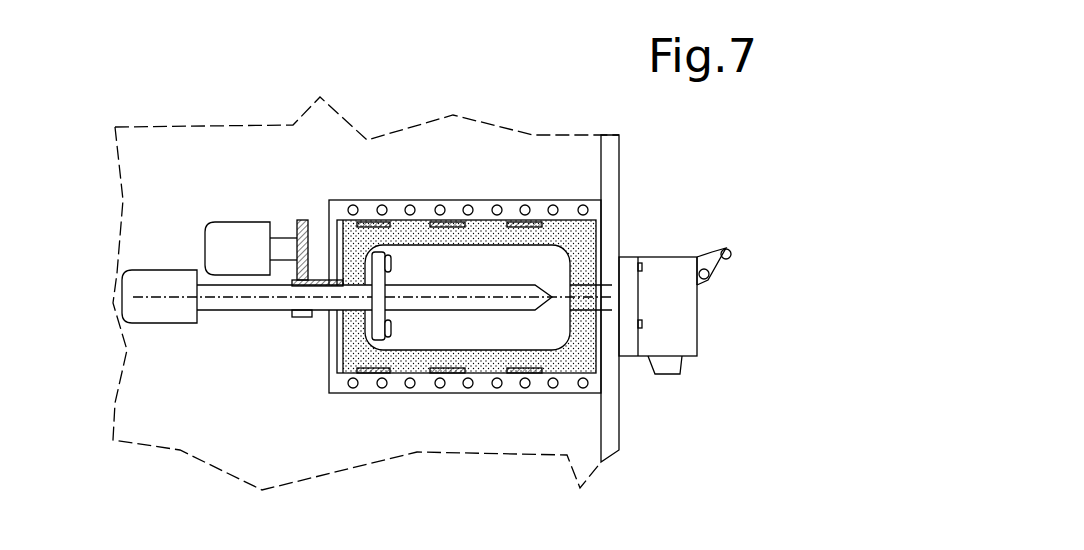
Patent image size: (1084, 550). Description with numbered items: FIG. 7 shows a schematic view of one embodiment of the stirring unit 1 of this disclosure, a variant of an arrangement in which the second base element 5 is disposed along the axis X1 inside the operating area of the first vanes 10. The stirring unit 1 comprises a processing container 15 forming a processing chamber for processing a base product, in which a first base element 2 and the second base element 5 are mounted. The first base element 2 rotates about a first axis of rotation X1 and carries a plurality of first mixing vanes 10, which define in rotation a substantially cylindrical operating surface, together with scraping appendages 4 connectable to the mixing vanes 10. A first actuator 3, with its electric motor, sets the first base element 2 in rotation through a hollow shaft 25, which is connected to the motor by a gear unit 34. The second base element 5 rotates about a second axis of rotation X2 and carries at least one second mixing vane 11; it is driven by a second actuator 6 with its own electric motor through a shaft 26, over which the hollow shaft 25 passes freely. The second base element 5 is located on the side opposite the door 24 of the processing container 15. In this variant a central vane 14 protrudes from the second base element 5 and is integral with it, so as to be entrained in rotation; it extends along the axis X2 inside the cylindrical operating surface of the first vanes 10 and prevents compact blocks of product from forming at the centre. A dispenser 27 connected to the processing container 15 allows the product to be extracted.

The stirring unit 1 is at (507, 183).
The first base element 2 is at (467, 297).
The first actuator 3 is at (238, 212).
The scraping appendages 4 is at (385, 210).
The second base element 5 is at (362, 329).
The second actuator 6 is at (155, 338).
The first mixing vanes 10 is at (479, 198).
The second mixing vane 11 is at (404, 323).
The central vane 14 is at (458, 312).
The processing container 15 is at (607, 370).
The door 24 is at (643, 217).
The shaft 25 is at (297, 320).
The shaft 26 is at (197, 285).
The dispenser 27 is at (712, 327).
The gear unit 34 is at (318, 267).
The first axis of rotation X1 is at (535, 302).
The second axis of rotation X2 is at (224, 298).